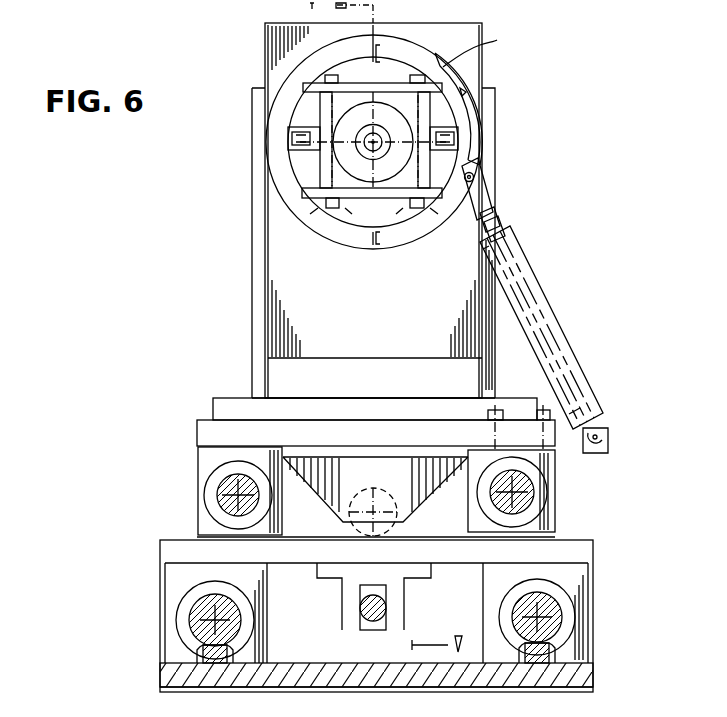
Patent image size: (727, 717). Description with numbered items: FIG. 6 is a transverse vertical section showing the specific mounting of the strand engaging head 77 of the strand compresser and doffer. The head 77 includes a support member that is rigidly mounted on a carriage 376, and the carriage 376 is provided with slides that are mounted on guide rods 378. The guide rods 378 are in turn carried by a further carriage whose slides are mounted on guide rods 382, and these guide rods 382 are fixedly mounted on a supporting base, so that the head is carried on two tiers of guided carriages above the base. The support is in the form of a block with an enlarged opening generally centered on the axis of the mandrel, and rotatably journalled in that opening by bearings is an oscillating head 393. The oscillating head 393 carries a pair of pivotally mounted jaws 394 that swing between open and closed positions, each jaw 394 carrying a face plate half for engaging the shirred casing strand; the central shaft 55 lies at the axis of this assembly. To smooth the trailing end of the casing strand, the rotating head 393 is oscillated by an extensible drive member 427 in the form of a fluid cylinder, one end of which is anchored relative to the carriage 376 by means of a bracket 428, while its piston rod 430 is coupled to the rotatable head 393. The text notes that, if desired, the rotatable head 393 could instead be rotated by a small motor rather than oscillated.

The head 77 is at (530, 106).
The wheel shaft 55 is at (374, 128).
The jaws 394 is at (346, 155).
The oscillating head 393 is at (497, 40).
The piston rod 430 is at (500, 216).
The extensible drive member 427 is at (552, 323).
The bracket 428 is at (570, 454).
The carriage 376 is at (200, 432).
The guide rods 378 is at (212, 494).
The guide rods 382 is at (193, 610).